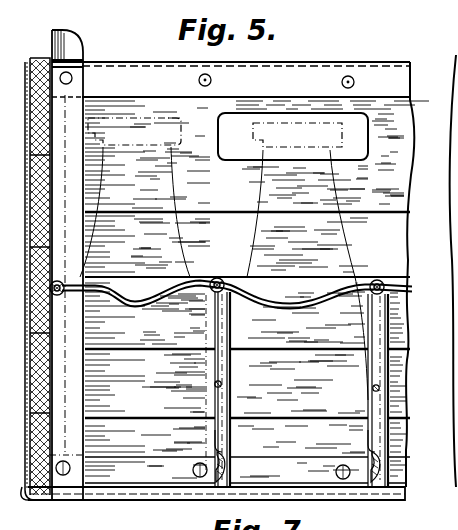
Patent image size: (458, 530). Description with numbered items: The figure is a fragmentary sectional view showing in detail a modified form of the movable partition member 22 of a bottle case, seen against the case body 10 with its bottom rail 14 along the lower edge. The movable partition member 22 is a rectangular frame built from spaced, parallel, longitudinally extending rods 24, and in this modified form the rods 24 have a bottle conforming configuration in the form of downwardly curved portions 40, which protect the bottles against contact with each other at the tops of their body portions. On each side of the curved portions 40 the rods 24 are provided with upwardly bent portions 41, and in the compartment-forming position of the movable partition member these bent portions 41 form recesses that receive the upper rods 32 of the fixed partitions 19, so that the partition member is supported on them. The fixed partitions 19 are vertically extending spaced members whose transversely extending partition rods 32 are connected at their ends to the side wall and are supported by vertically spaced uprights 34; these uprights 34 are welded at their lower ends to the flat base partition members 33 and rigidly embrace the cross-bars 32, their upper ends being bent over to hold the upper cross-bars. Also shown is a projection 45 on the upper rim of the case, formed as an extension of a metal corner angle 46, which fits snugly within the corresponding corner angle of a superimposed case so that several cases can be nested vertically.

The panel 10 is at (396, 53).
The bottom rail 14 is at (337, 488).
The fixed partition 19 is at (233, 373).
The movable partition member 22 is at (250, 264).
The rod 24 is at (352, 289).
The partition rod 32 is at (222, 293).
The flat base partition member 33 is at (207, 458).
The upright 34 is at (221, 430).
The downwardly curved portion 40 is at (143, 300).
The upwardly bent portion 41 is at (213, 274).
The projection 45 is at (66, 46).
The metal corner angle 46 is at (64, 116).